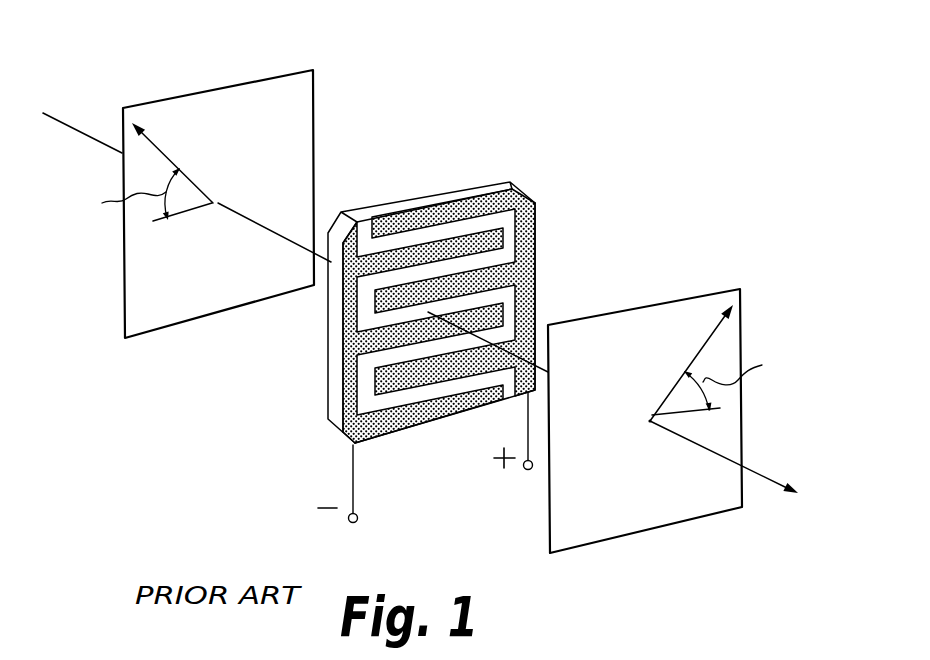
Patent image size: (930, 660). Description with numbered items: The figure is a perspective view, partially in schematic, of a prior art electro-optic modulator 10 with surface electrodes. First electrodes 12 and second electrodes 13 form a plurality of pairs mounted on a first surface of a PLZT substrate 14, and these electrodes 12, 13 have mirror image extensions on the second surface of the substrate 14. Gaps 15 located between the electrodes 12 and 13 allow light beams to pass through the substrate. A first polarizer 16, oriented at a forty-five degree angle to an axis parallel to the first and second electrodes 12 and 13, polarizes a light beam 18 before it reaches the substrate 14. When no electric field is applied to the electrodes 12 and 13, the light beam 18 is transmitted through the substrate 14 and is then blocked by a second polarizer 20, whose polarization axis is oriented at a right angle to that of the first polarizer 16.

The electro-optic modulator 10 is at (553, 95).
The first electrodes 12 is at (443, 226).
The second electrodes 13 is at (405, 318).
The PLZT substrate 14 is at (584, 218).
The gaps 15 is at (400, 277).
The first polarizer 16 is at (268, 86).
The light beam 18 is at (70, 127).
The second polarizer 20 is at (660, 528).